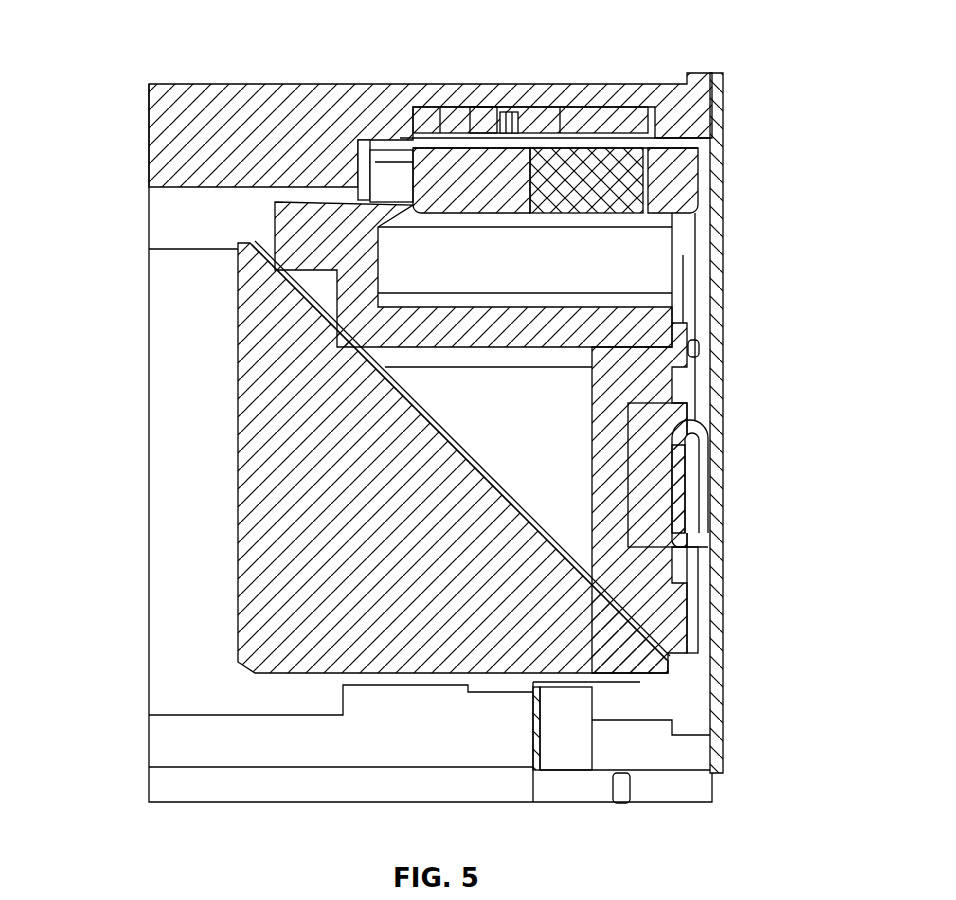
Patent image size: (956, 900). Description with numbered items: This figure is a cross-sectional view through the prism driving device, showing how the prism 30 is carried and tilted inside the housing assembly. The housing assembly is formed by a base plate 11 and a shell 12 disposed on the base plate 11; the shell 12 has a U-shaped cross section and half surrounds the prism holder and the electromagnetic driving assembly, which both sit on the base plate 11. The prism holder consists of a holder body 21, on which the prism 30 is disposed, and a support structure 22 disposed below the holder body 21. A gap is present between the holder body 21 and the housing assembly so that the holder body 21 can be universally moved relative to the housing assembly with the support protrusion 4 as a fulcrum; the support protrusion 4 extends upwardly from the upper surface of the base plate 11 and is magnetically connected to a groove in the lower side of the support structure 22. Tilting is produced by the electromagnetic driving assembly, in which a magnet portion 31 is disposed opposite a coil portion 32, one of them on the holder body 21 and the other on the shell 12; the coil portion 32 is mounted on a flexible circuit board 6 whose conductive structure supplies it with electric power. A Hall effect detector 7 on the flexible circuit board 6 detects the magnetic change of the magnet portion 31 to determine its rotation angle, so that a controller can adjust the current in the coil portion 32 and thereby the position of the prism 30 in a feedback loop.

The base plate 11 is at (717, 298).
The shell 12 is at (290, 118).
The coil portion 32 is at (458, 122).
The flexible circuit board 6 is at (497, 118).
The Hall effect detector 7 is at (540, 120).
The magnet portion 31 is at (445, 178).
The holder body 21 is at (642, 592).
The support structure 22 is at (650, 510).
The support protrusion 4 is at (675, 460).
The prism 30 is at (333, 550).